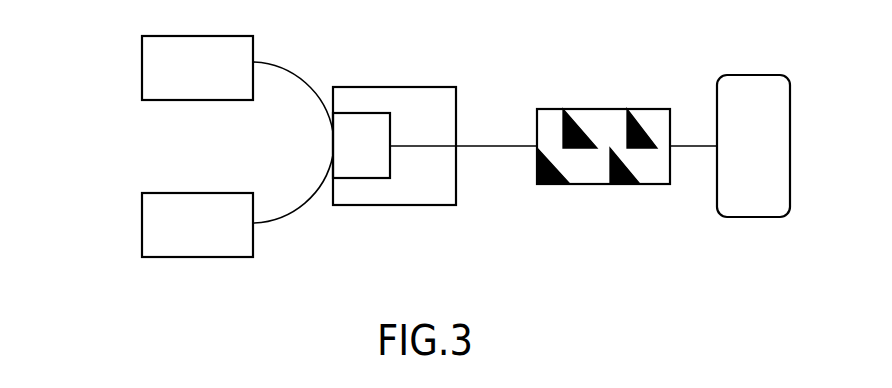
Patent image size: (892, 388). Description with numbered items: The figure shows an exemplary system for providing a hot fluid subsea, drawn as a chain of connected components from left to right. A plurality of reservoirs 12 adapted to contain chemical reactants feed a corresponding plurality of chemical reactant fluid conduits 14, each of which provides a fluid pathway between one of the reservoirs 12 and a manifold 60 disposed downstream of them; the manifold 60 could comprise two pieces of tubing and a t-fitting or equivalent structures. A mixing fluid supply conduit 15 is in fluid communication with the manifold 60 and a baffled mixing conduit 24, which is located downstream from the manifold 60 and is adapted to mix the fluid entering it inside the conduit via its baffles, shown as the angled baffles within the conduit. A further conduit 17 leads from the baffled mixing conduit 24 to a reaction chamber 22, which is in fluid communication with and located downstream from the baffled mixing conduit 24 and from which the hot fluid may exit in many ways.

The reservoirs 12 is at (142, 93).
The chemical reactant fluid conduits 14 is at (290, 75).
The manifold 60 is at (392, 205).
The mixing fluid supply conduit 15 is at (497, 147).
The baffled mixing conduit 24 is at (593, 184).
The drive shaft 17 is at (693, 147).
The reaction chamber 22 is at (747, 217).